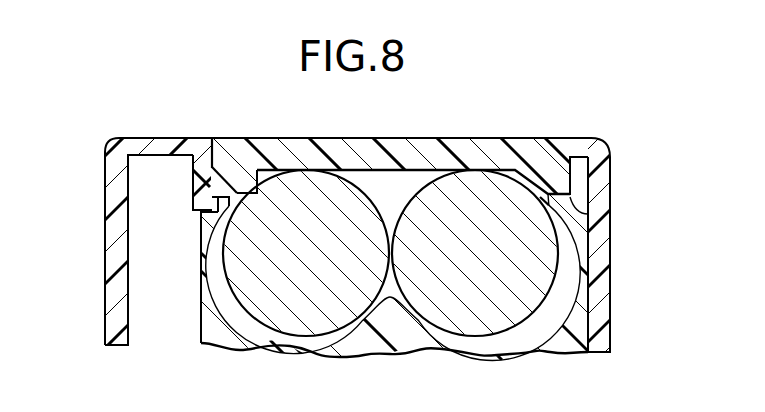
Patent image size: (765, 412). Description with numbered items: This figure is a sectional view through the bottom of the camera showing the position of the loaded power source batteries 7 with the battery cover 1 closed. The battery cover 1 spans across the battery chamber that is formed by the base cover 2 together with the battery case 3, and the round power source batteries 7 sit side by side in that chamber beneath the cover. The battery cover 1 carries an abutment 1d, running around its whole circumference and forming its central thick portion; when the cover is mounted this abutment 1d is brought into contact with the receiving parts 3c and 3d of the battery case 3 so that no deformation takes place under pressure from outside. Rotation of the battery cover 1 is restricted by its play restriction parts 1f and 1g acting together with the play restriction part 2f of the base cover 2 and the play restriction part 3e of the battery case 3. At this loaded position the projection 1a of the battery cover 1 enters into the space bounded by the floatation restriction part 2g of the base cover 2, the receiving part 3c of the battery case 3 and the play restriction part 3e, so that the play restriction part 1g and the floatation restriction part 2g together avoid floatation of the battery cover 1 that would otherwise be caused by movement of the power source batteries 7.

The battery cover 1 is at (404, 152).
The projection 1a is at (543, 174).
The abutment 1d is at (238, 180).
The play restriction part 1f is at (215, 168).
The play restriction part 1g is at (553, 202).
The base cover 2 is at (116, 196).
The play restriction part 2f is at (208, 162).
The floatation restriction part 2g is at (553, 160).
The battery case 3 is at (400, 337).
The receiving part 3c is at (587, 210).
The receiving part 3d is at (220, 201).
The play restriction part 3e is at (578, 160).
The power source batteries 7 is at (316, 323).